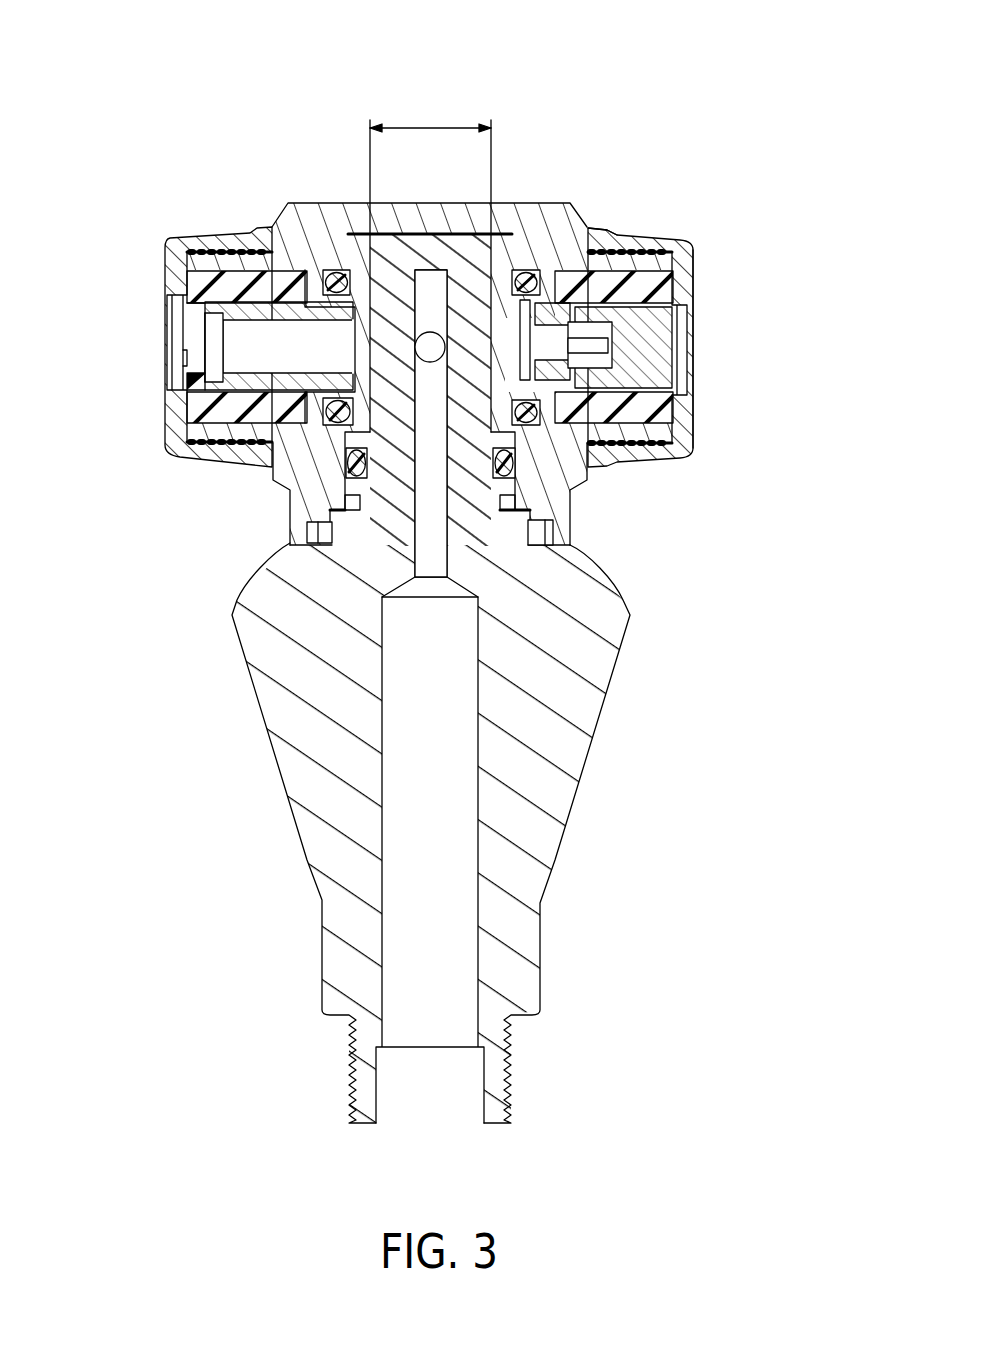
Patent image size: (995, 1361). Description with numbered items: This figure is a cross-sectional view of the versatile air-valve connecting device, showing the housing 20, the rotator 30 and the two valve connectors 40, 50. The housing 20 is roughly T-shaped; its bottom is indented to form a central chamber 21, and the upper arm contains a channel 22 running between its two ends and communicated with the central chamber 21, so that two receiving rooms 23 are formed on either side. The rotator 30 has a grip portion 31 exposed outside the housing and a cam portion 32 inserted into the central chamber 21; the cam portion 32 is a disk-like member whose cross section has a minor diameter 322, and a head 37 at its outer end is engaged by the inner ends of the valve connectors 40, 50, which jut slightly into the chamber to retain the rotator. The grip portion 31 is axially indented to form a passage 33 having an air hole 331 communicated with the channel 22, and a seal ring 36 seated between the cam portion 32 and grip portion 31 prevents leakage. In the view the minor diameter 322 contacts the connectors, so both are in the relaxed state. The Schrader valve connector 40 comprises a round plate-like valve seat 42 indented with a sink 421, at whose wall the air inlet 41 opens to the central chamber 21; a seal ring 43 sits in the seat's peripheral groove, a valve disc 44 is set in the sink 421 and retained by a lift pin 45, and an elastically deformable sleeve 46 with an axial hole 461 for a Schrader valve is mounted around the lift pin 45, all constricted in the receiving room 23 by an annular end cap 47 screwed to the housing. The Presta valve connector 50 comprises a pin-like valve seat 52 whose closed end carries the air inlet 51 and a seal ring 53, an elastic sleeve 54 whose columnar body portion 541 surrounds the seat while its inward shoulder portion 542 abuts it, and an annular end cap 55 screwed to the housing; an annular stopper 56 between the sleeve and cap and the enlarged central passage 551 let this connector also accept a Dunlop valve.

The housing 20 is at (350, 200).
The central chamber 21 is at (295, 585).
The channel 22 is at (332, 266).
The receiving rooms 23 is at (244, 250).
The rotator 30 is at (570, 851).
The grip portion 31 is at (330, 833).
The cam portion 32 is at (402, 405).
The passage 33 is at (440, 793).
The minor diameter 322 is at (432, 128).
The air hole 331 is at (440, 345).
The seal ring 36 is at (538, 592).
The head 37 is at (445, 248).
The Schrader valve connector 40 is at (666, 227).
The air inlet 41 is at (613, 460).
The valve seat 42 is at (575, 480).
The sink 421 is at (603, 230).
The seal ring 43 is at (530, 278).
The valve disc 44 is at (630, 405).
The lift pin 45 is at (602, 340).
The elastic sleeve 46 is at (637, 398).
The axial hole 461 is at (655, 367).
The end cap 47 is at (668, 457).
The Presta valve connector 50 is at (213, 224).
The air inlet 51 is at (290, 482).
The valve seat 52 is at (279, 252).
The seal ring 53 is at (305, 266).
The elastic sleeve 54 is at (255, 410).
The columnar body portion 541 is at (262, 441).
The shoulder portion 542 is at (185, 358).
The end cap 55 is at (190, 252).
The central passage 551 is at (178, 302).
The annular stopper 56 is at (190, 383).